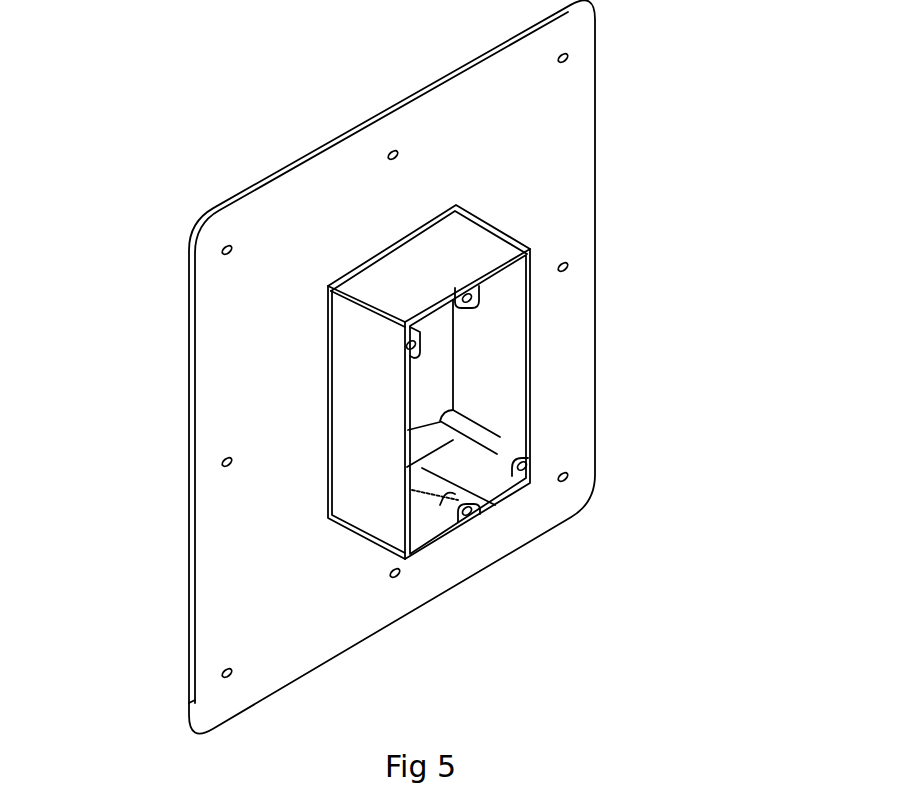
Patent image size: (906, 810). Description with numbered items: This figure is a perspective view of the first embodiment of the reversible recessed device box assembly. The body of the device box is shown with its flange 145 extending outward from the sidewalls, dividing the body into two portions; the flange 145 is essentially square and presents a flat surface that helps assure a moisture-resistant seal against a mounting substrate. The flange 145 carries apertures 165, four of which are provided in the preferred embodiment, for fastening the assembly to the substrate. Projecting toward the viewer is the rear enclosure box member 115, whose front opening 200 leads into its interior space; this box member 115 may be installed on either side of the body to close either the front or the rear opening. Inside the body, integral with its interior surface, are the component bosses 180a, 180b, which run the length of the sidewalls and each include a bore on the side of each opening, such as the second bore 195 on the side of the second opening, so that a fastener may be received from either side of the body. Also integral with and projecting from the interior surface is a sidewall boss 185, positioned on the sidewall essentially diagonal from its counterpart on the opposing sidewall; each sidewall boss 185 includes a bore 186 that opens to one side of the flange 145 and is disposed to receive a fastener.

The rear enclosure box member 115 is at (130, 6).
The flange 145 is at (550, 182).
The aperture 165 is at (570, 272).
The front opening 200 is at (403, 420).
The component boss 180a is at (443, 500).
The component boss 180b is at (460, 296).
The bore 186 is at (408, 347).
The sidewall boss 185 is at (488, 445).
The second bore 195 is at (470, 515).